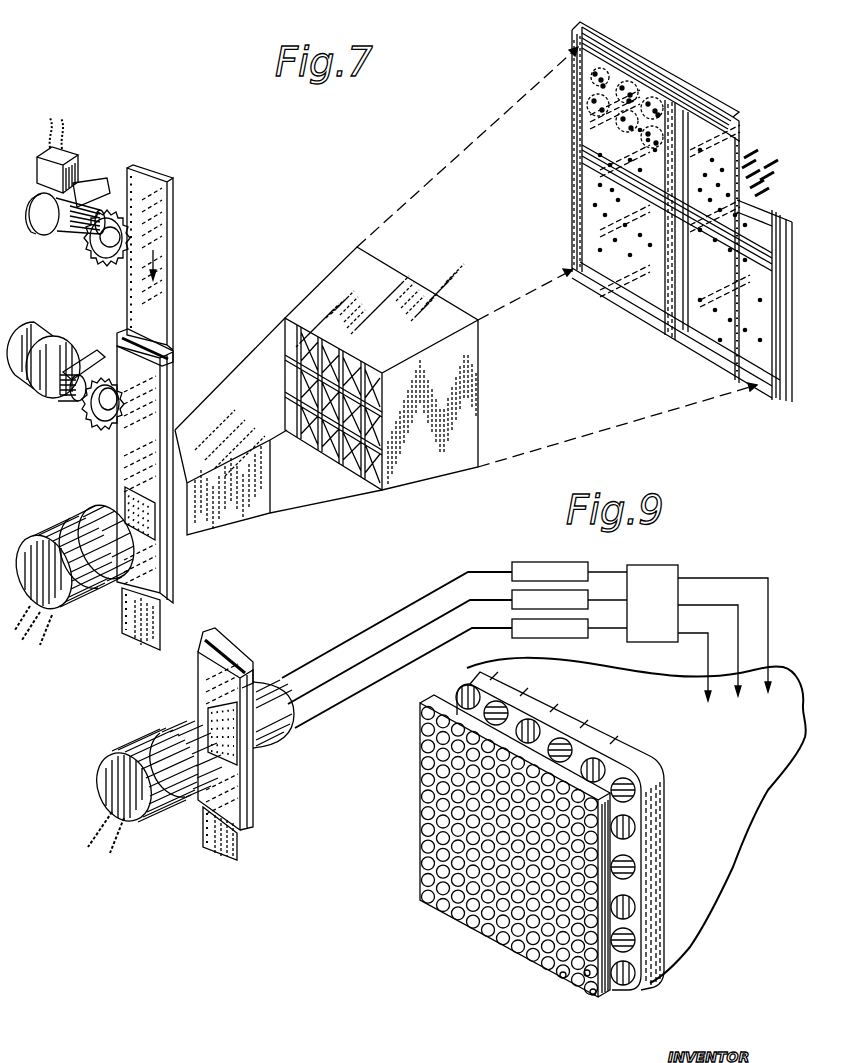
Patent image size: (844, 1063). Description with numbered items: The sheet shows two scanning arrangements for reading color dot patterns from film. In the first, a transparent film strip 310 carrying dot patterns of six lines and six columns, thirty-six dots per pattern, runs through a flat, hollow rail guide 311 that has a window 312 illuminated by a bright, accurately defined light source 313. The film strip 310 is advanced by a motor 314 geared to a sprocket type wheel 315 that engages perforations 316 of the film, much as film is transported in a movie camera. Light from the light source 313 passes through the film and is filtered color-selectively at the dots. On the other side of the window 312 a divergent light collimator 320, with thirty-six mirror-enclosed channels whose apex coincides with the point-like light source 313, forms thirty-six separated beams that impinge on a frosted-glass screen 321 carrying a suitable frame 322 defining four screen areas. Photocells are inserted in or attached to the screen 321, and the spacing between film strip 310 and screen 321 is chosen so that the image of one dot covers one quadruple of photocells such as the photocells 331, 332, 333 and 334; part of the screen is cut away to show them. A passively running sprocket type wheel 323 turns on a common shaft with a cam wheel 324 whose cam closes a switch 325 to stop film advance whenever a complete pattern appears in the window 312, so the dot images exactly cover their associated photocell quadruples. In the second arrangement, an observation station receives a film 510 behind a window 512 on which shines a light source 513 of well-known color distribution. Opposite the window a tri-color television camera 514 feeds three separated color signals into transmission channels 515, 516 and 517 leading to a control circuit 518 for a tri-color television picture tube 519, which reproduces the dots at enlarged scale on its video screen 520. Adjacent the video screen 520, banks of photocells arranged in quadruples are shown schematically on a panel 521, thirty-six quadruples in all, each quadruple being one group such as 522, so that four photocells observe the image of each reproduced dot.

In FIG. 7, the film strip 310 is at (161, 219).
In FIG. 7, the rail guide 311 is at (167, 362).
In FIG. 7, the window 312 is at (125, 487).
In FIG. 7, the light source 313 is at (88, 590).
In FIG. 7, the motor 314 is at (31, 333).
In FIG. 7, the sprocket type wheel 315 is at (83, 418).
In FIG. 7, the perforations 316 is at (128, 283).
In FIG. 7, the divergent light collimator 320 is at (280, 312).
In FIG. 7, the screen 321 is at (584, 26).
In FIG. 7, the frame 322 is at (663, 97).
In FIG. 7, the sprocket type wheel 323 is at (113, 213).
In FIG. 7, the cam wheel 324 is at (33, 227).
In FIG. 7, the switch 325 is at (48, 148).
In FIG. 7, the photocell 331 is at (597, 70).
In FIG. 7, the photocell 332 is at (598, 80).
In FIG. 7, the photocell 333 is at (600, 85).
In FIG. 7, the photocell 334 is at (603, 88).
In FIG. 9, the film 510 is at (232, 847).
In FIG. 9, the window 512 is at (207, 717).
In FIG. 9, the light source 513 is at (120, 790).
In FIG. 9, the television camera 514 is at (270, 747).
In FIG. 9, the transmission channel 515 is at (552, 575).
In FIG. 9, the transmission channel 516 is at (575, 602).
In FIG. 9, the transmission channel 517 is at (523, 632).
In FIG. 9, the control circuit 518 is at (657, 573).
In FIG. 9, the television picture tube 519 is at (733, 860).
In FIG. 9, the video screen 520 is at (598, 760).
In FIG. 9, the panel 521 is at (410, 900).
In FIG. 9, the group of photocells 522 is at (593, 997).